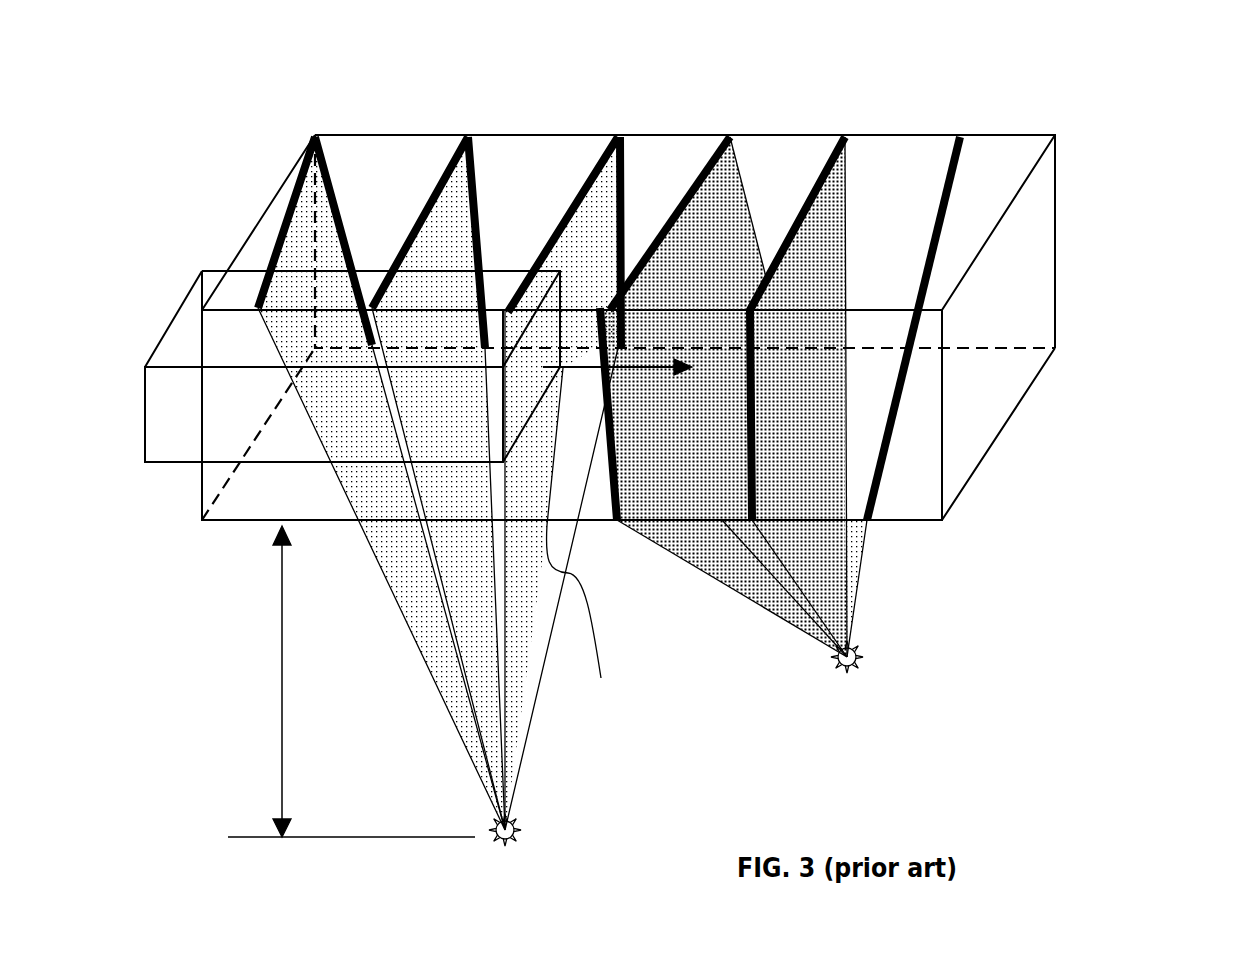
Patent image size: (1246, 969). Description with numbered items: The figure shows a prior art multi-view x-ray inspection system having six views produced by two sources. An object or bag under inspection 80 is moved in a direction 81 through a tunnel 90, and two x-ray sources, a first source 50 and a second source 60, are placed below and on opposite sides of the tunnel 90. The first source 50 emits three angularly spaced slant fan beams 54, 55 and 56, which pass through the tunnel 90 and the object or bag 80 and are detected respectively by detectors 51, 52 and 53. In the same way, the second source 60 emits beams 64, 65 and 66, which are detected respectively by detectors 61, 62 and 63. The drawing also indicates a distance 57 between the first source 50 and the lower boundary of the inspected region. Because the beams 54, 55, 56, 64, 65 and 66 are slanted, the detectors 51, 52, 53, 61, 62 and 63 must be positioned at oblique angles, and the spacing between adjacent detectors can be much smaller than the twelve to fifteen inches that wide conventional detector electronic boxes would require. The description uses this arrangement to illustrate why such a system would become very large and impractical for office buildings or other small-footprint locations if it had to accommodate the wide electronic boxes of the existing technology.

The first x-ray source 50 is at (532, 838).
The detector 51 is at (477, 168).
The detector 52 is at (332, 183).
The detector 53 is at (623, 172).
The beam 54 is at (467, 578).
The beam 55 is at (392, 560).
The beam 56 is at (523, 600).
The distance 57 is at (277, 690).
The second x-ray source 60 is at (833, 655).
The detector 61 is at (808, 195).
The detector 62 is at (697, 173).
The detector 63 is at (942, 175).
The beam 64 is at (827, 562).
The beam 65 is at (713, 540).
The beam 66 is at (870, 560).
The object or bag under inspection 80 is at (183, 327).
The direction 81 is at (583, 540).
The tunnel 90 is at (1010, 305).